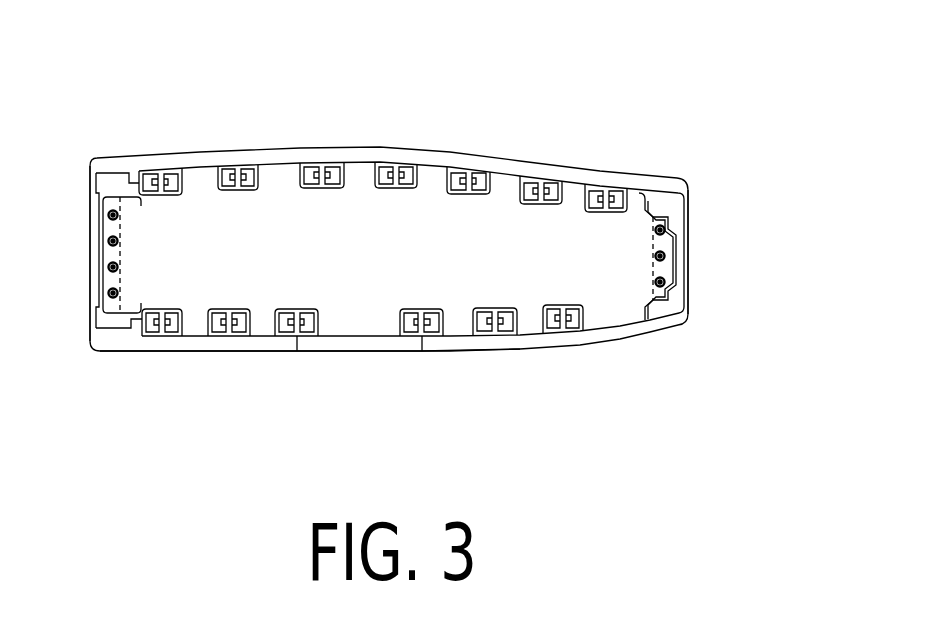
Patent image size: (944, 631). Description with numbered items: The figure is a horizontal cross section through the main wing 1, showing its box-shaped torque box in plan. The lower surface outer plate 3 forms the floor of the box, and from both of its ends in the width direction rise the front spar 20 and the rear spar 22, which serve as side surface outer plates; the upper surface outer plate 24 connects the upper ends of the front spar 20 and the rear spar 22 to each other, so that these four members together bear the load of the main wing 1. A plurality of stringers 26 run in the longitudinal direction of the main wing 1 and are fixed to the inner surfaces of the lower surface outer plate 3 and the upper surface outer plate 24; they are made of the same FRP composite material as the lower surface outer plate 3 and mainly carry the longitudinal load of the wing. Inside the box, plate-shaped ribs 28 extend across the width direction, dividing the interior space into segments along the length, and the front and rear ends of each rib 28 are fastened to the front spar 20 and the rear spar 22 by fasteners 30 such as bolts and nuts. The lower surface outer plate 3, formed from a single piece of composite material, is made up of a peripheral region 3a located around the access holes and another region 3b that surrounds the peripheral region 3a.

The main wing 1 is at (389, 251).
The lower surface outer plate 3 is at (241, 412).
The peripheral region 3a is at (365, 353).
The another region 3b is at (153, 352).
The front spar 20 is at (92, 221).
The rear spar 22 is at (686, 207).
The upper surface outer plate 24 is at (295, 157).
The stringers 26 is at (242, 196).
The ribs 28 is at (310, 262).
The fasteners 30 is at (107, 267).